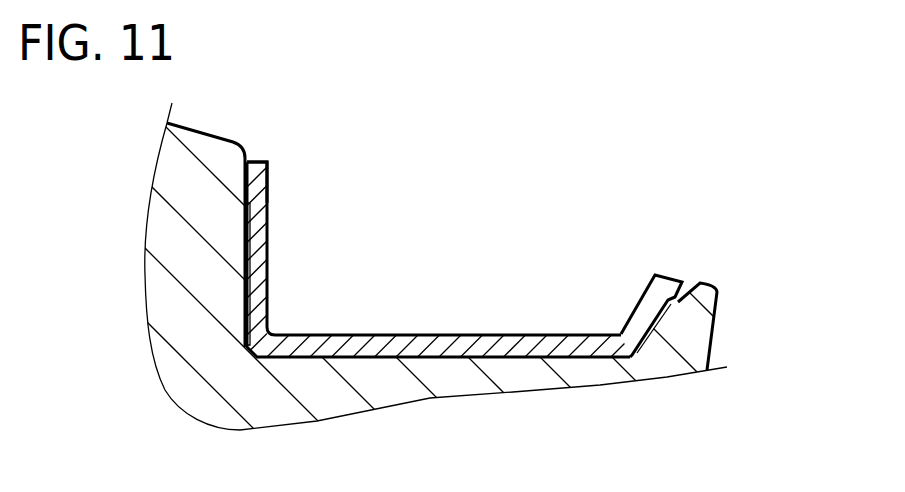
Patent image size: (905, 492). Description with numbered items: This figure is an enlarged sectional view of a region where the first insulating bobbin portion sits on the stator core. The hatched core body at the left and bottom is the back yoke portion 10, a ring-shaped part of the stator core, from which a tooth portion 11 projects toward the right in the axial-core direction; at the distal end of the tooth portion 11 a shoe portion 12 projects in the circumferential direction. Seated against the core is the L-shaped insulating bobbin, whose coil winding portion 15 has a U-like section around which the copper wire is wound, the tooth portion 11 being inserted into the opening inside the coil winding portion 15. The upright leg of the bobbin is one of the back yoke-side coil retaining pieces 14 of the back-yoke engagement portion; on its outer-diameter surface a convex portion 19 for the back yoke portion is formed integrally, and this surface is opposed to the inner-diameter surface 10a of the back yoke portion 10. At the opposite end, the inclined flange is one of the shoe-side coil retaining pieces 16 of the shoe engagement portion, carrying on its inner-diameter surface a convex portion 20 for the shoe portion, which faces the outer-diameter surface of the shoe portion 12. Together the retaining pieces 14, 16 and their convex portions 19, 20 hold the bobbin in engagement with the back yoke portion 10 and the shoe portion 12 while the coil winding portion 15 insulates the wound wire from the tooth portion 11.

The back yoke portion 10 is at (188, 258).
The inner-diameter surfaces 10a is at (255, 212).
The tooth portions 11 is at (388, 380).
The shoe portions 12 is at (690, 345).
The back yoke-side coil retaining pieces 14 is at (255, 255).
The coil winding portion 15 is at (444, 333).
The shoe-side coil retaining pieces 16 is at (652, 292).
The convex portions for the back yoke portion 19 is at (255, 173).
The convex portions for the shoe portion 20 is at (692, 306).